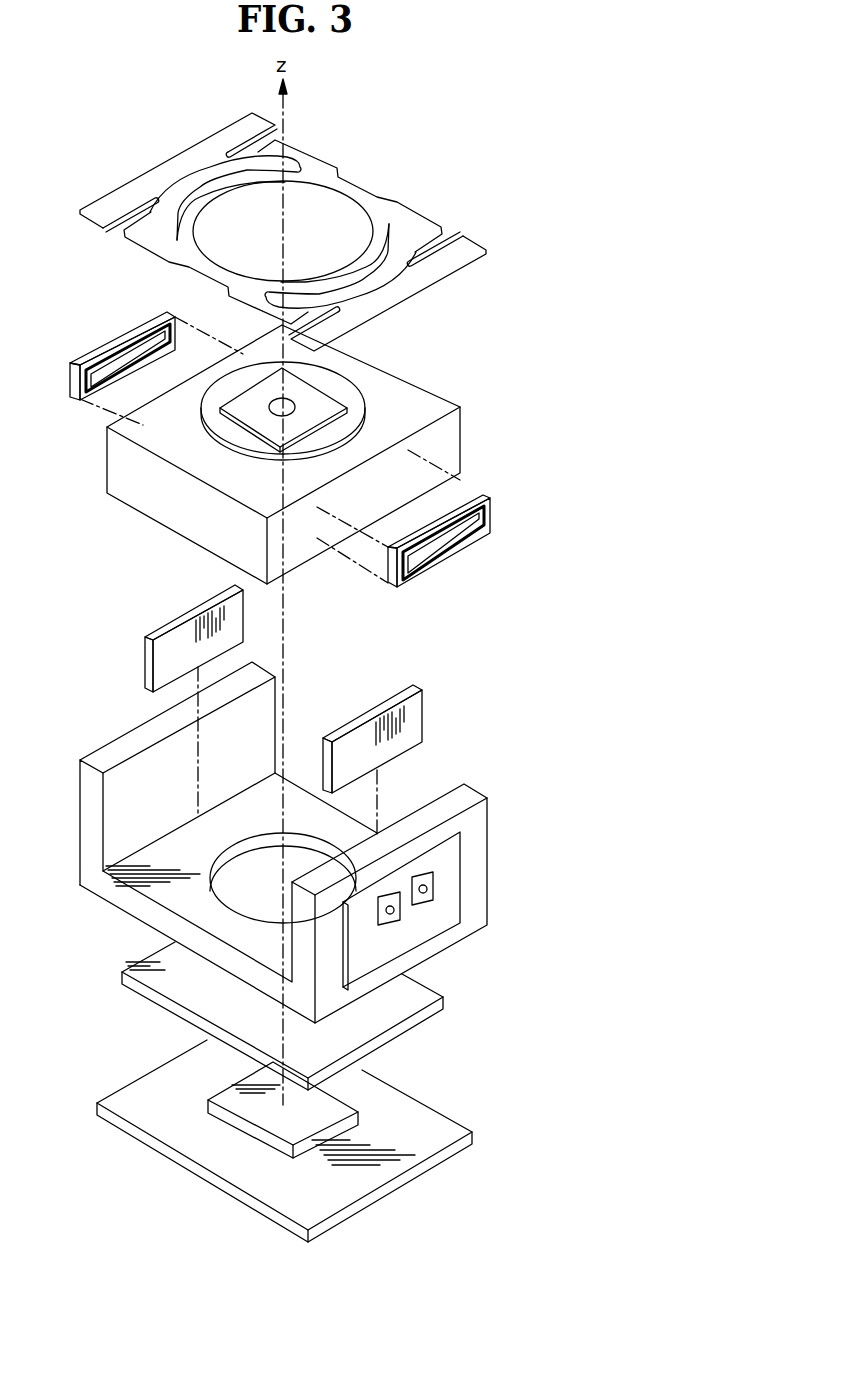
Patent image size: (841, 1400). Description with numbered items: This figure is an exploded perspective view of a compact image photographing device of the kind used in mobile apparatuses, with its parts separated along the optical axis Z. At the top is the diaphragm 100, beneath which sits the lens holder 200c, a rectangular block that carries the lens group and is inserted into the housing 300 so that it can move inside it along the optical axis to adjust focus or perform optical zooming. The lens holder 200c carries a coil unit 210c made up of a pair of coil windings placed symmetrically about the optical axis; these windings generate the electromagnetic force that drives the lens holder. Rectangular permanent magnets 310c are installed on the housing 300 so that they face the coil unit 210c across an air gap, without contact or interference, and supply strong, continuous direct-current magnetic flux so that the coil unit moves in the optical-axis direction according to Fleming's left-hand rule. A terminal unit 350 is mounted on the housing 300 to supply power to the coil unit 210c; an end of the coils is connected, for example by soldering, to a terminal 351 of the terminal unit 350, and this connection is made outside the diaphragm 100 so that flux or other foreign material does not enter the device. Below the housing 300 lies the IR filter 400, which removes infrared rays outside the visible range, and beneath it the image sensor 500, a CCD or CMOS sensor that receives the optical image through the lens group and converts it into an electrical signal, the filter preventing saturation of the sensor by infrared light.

The diaphragm 100 is at (455, 282).
The lens holder 200c is at (163, 517).
The coil unit 210c is at (455, 543).
The magnet 310c is at (418, 722).
The housing 300 is at (120, 905).
The terminal unit 350 is at (418, 932).
The terminal 351 is at (436, 887).
The IR filter 400 is at (197, 985).
The image sensor 500 is at (267, 1113).